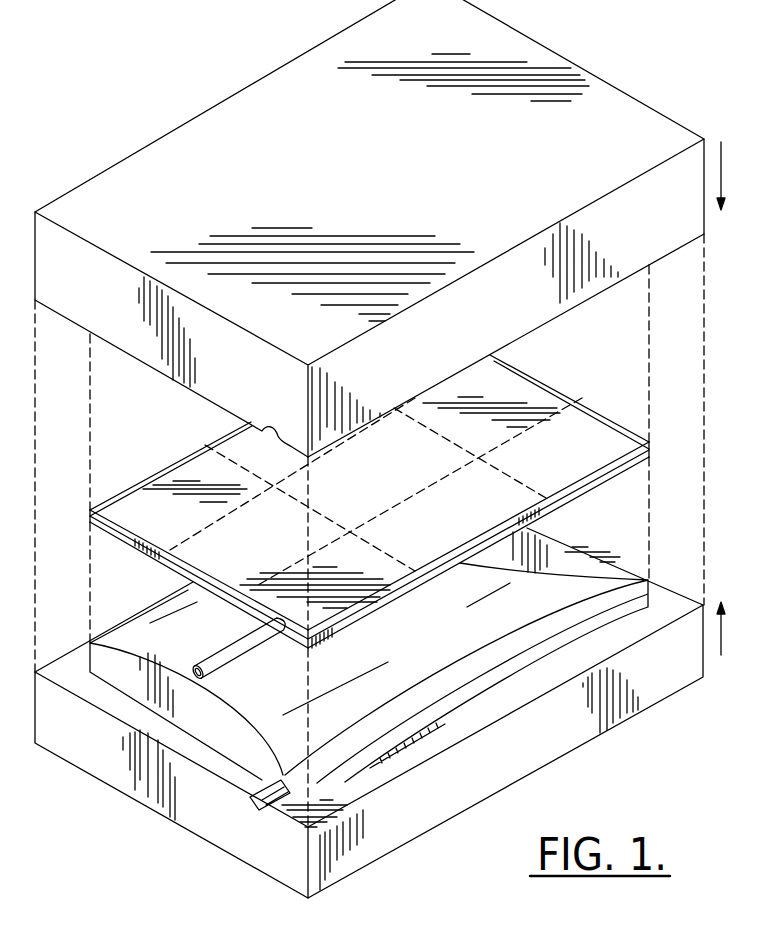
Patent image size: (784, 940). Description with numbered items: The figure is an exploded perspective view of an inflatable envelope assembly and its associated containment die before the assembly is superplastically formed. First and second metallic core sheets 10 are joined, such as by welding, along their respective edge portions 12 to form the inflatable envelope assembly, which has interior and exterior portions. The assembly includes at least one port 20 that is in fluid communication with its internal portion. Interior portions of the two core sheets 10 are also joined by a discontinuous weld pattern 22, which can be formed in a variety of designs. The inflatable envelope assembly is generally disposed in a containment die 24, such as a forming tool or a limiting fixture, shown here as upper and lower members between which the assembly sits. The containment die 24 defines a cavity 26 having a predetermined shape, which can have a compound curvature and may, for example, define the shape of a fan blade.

The metallic core sheets 10 is at (86, 508).
The edge portions 12 is at (583, 450).
The port 20 is at (238, 648).
The discontinuous weld pattern 22 is at (542, 429).
The containment die 24 is at (615, 117).
The cavity 26 is at (425, 662).